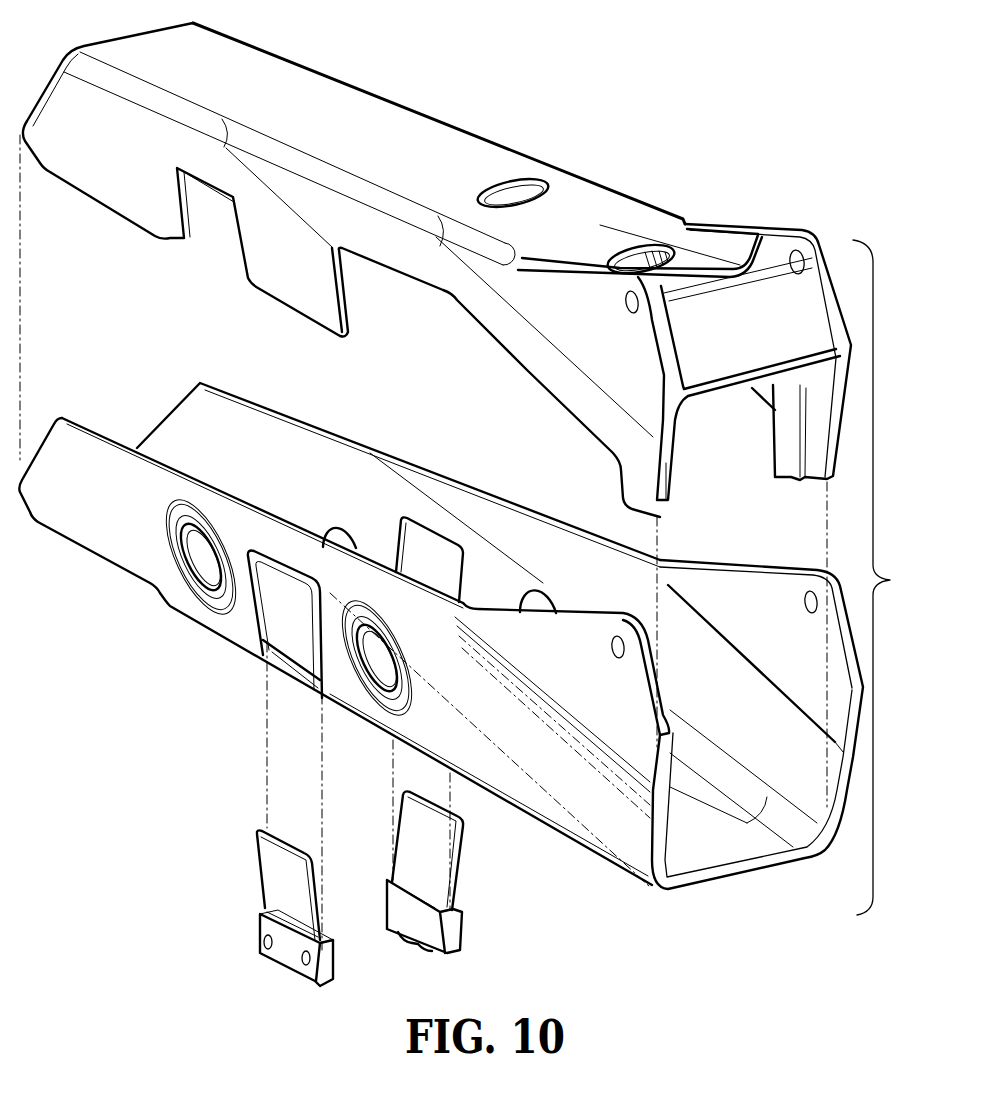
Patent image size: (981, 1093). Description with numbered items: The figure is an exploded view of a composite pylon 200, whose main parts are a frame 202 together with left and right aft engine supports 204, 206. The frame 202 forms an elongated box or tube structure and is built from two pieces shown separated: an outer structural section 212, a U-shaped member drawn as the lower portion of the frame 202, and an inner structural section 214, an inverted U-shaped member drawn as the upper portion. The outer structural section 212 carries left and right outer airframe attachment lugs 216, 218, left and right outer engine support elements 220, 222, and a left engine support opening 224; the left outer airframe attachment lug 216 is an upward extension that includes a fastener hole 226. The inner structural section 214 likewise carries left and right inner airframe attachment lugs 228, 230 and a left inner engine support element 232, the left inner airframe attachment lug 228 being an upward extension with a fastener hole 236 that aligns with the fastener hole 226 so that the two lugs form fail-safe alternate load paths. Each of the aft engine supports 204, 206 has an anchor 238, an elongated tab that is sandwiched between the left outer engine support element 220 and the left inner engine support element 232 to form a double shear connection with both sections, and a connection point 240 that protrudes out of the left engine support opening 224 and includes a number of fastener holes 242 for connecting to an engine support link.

The composite pylon 200 is at (585, 40).
The frame 202 is at (476, 470).
The left aft engine support 204 is at (228, 903).
The right aft engine support 206 is at (483, 915).
The outer structural section 212 is at (160, 630).
The inner structural section 214 is at (590, 138).
The left outer airframe attachment lug 216 is at (583, 707).
The right outer airframe attachment lug 218 is at (753, 597).
The left outer engine support element 220 is at (267, 617).
The right outer engine support element 222 is at (430, 550).
The left engine support opening 224 is at (275, 700).
The fastener hole 226 is at (805, 598).
The left inner airframe attachment lug 228 is at (597, 305).
The right inner airframe attachment lug 230 is at (826, 252).
The left inner engine support element 232 is at (273, 280).
The fastener hole 236 is at (626, 300).
The anchor 238 is at (273, 873).
The connection point 240 is at (253, 984).
The fastener holes 242 is at (305, 967).